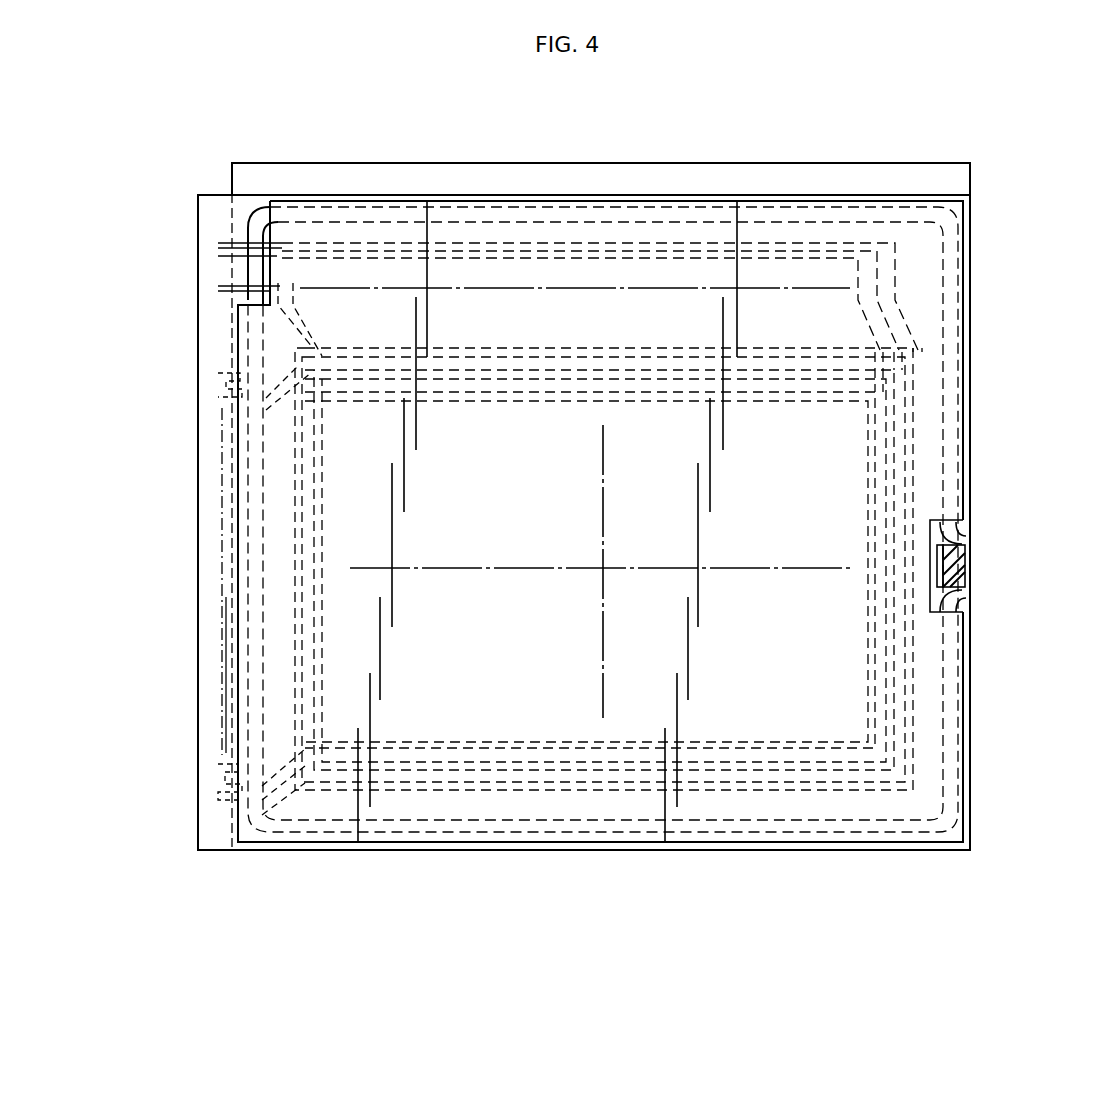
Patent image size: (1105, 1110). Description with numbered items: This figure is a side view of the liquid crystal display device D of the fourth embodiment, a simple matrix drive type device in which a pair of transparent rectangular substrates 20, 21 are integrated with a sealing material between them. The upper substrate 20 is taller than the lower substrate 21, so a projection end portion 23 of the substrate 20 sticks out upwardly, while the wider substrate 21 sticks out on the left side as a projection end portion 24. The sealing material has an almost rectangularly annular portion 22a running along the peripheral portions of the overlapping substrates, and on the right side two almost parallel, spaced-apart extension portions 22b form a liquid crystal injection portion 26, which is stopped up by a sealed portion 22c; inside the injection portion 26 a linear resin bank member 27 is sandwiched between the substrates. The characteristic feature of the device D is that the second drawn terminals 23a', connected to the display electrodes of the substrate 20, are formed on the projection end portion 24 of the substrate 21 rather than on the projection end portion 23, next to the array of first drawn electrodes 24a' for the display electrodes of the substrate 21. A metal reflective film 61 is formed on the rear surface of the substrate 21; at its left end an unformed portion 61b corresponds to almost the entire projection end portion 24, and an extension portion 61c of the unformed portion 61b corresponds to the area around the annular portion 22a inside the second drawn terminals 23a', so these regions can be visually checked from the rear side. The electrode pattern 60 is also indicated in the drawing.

The substrate 20 is at (806, 165).
The substrate 21 is at (556, 197).
The projection end portion 23 is at (650, 186).
The annular portion 22a is at (250, 300).
The second drawn terminals 23a' is at (517, 289).
The extension portion 61c is at (224, 228).
The unformed portion 61b is at (205, 590).
The projection end portion 24 is at (205, 670).
The first drawn electrodes 24a' is at (183, 586).
The electrode wiring pattern 60 is at (534, 718).
The metal reflective film 61 is at (637, 712).
The liquid crystal injection portion 26 is at (936, 598).
The bank member 27 is at (940, 570).
The sealed portion 22c is at (958, 565).
The extension portions 22b is at (968, 531).
The liquid crystal display device D is at (1002, 212).